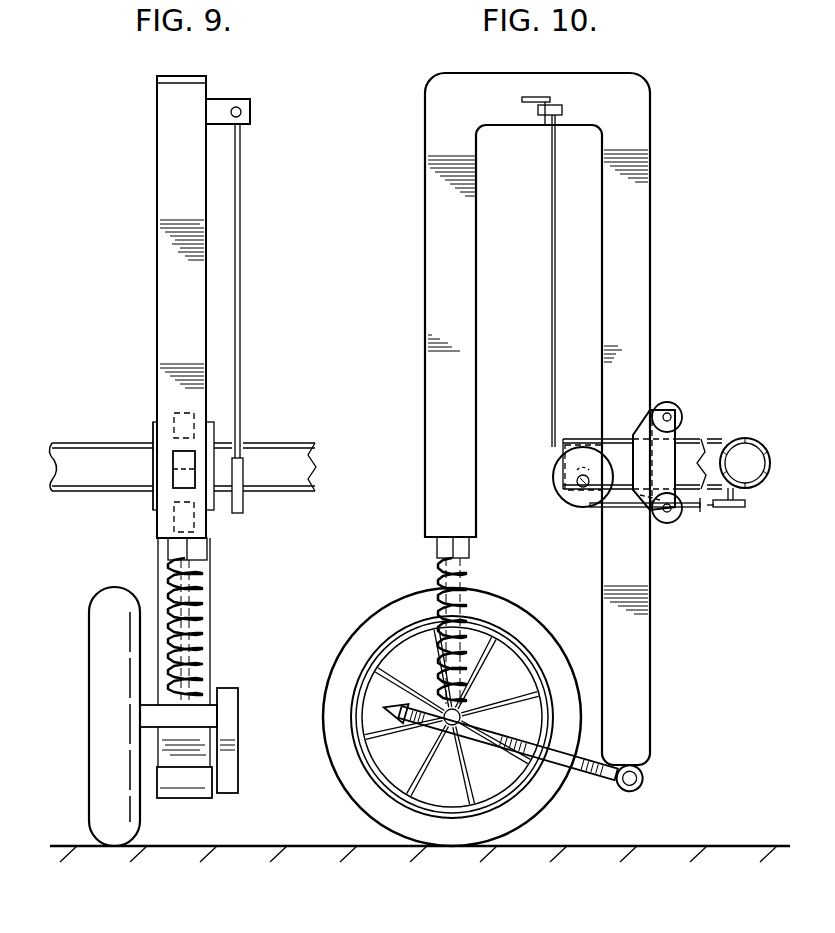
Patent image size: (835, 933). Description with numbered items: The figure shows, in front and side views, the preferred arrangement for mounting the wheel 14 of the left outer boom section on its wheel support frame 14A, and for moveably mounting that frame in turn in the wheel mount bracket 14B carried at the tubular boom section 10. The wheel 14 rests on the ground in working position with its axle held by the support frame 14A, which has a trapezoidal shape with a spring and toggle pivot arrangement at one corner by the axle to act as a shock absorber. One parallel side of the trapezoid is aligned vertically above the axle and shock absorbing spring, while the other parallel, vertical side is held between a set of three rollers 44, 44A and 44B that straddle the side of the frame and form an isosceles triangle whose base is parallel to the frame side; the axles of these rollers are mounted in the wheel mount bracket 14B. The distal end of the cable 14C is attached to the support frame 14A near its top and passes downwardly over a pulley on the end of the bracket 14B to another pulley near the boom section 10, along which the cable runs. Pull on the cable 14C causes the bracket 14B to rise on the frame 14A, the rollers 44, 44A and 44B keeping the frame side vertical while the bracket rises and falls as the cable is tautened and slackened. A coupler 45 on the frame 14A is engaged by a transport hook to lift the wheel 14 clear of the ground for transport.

In FIG. 9, the outer boom section 10 is at (74, 450).
In FIG. 9, the wheel 14 is at (89, 810).
In FIG. 10, the wheel 14 is at (332, 772).
In FIG. 9, the wheel support frame 14A is at (157, 265).
In FIG. 10, the wheel support frame 14A is at (425, 258).
In FIG. 9, the wheel mount bracket 14B is at (153, 423).
In FIG. 10, the wheel mount bracket 14B is at (678, 428).
In FIG. 9, the cable 14C is at (240, 178).
In FIG. 10, the cable 14C is at (552, 216).
In FIG. 9, the roller 44 is at (172, 468).
In FIG. 10, the roller 44 is at (575, 462).
In FIG. 9, the roller 44A is at (195, 420).
In FIG. 10, the roller 44A is at (662, 404).
In FIG. 9, the roller 44B is at (200, 518).
In FIG. 10, the roller 44B is at (670, 527).
In FIG. 9, the coupler 45 is at (238, 720).
In FIG. 10, the coupler 45 is at (367, 672).